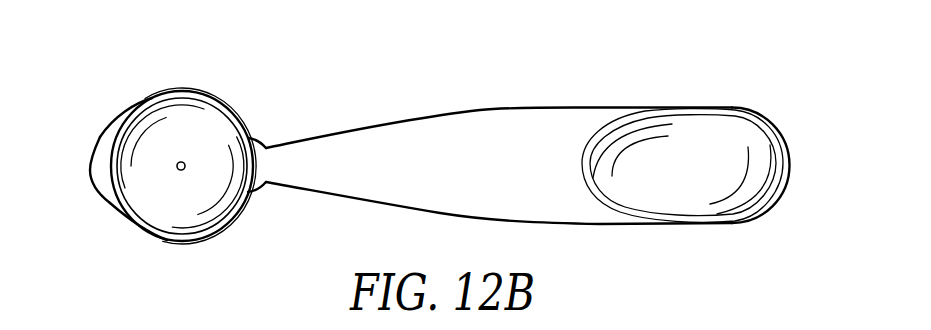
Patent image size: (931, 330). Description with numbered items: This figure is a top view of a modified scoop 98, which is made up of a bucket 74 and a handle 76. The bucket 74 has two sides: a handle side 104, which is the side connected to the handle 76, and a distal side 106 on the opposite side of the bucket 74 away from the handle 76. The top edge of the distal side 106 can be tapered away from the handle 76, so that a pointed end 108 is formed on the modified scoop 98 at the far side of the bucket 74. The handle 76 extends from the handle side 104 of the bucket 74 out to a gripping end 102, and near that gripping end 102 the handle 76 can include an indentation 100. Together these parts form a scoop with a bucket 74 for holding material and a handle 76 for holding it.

The bucket 74 is at (217, 99).
The handle 76 is at (487, 140).
The modified scoop 98 is at (591, 243).
The indentation 100 is at (655, 143).
The gripping end 102 is at (789, 164).
The handle side 104 is at (248, 137).
The distal side 106 is at (103, 132).
The pointed end 108 is at (90, 166).